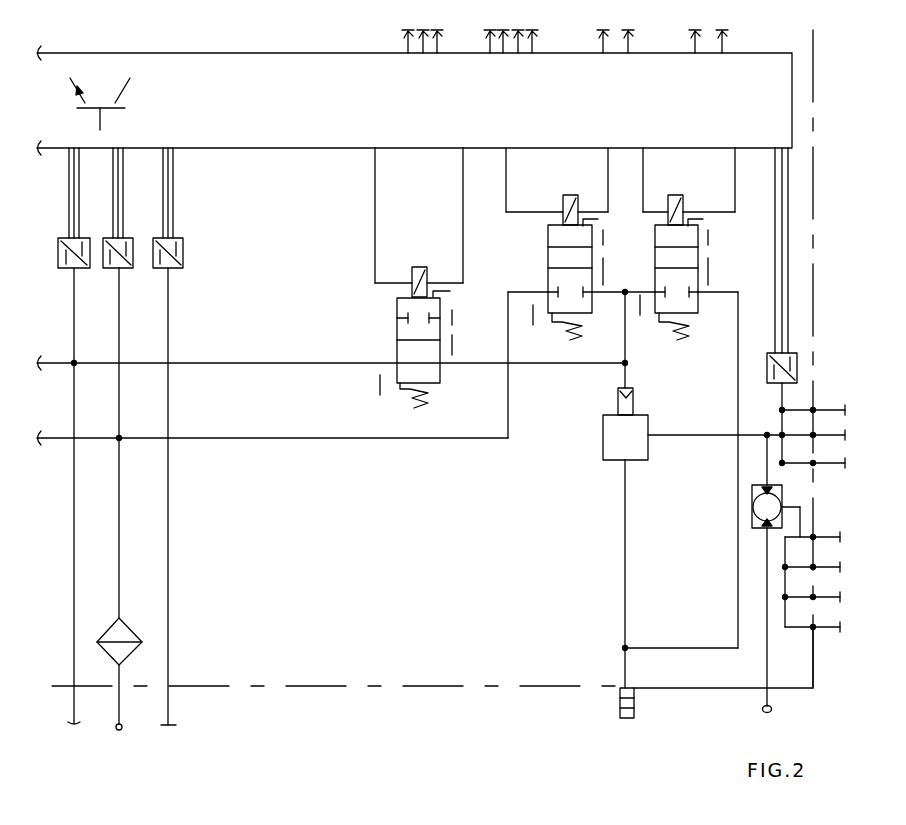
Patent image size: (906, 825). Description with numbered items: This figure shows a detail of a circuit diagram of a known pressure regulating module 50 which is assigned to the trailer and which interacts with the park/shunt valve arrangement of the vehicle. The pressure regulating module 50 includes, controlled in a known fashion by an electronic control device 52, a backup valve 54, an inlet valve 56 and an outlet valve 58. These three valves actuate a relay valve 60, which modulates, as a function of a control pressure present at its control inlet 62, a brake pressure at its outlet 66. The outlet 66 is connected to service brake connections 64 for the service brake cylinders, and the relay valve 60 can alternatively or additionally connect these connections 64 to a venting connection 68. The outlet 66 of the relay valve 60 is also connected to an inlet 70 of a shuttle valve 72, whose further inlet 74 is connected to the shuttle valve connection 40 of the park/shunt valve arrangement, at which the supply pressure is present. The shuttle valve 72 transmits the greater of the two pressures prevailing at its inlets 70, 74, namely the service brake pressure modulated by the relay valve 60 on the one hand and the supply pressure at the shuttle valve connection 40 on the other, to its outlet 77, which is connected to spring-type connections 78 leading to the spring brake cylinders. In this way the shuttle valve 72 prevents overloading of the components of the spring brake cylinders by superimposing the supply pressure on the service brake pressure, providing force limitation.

The shuttle valve connection 40 is at (762, 709).
The pressure regulating module 50 is at (324, 710).
The electronic control device 52 is at (282, 131).
The backup valve 54 is at (408, 350).
The inlet valve 56 is at (556, 257).
The outlet valve 58 is at (660, 238).
The relay valve 60 is at (607, 443).
The control inlet 62 is at (620, 386).
The service brake connections 64 is at (817, 406).
The outlet 66 is at (652, 436).
The venting connection 68 is at (620, 711).
The inlet 70 is at (766, 487).
The shuttle valve 72 is at (760, 508).
The further inlet 74 is at (766, 527).
The outlet 77 is at (783, 506).
The spring-type connections 78 is at (819, 534).